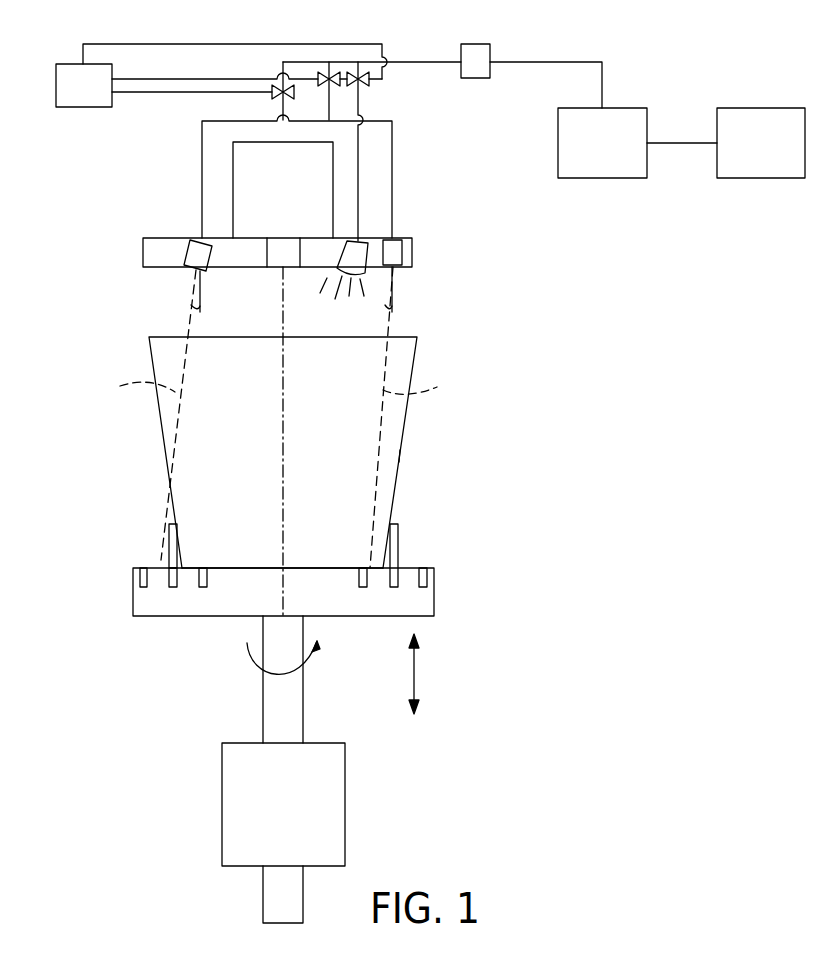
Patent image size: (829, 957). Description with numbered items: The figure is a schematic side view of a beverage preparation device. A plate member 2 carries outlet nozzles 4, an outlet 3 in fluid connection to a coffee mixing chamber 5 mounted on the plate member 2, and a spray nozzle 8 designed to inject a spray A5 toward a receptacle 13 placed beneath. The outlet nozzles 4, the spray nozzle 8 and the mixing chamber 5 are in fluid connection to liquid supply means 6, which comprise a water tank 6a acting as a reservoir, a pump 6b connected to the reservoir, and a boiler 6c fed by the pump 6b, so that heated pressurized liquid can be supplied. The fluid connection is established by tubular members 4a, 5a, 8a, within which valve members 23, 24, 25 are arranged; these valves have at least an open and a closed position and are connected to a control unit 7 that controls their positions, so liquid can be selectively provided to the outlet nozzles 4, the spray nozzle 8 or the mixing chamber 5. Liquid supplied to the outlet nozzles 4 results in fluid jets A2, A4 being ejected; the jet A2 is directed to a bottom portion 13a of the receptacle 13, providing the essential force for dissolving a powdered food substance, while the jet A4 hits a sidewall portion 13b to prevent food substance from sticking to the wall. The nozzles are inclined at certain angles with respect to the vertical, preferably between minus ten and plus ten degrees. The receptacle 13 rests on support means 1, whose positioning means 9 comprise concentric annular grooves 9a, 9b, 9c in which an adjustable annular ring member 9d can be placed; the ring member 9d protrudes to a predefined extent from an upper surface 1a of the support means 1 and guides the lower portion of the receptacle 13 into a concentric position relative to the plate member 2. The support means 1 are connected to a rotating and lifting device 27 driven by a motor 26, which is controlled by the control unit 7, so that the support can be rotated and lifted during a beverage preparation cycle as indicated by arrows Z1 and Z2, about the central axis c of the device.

The support means 1 is at (435, 596).
The upper surface of the support means 1a is at (408, 566).
The plate member 2 is at (413, 253).
The outlet 3 is at (275, 268).
The outlet nozzle 4 is at (188, 251).
The tubular member 4a is at (393, 177).
The coffee mixing chamber 5 is at (246, 185).
The tubular member 5a is at (283, 127).
The liquid supply means 6 is at (669, 54).
The water tank 6a is at (764, 108).
The pump 6b is at (630, 108).
The boiler 6c is at (475, 80).
The control unit 7 is at (56, 86).
The spray nozzle 8 is at (362, 246).
The tubular member 8a is at (360, 141).
The positioning means 9 is at (142, 568).
The annular groove 9a is at (143, 589).
The annular groove 9b is at (173, 589).
The annular groove 9c is at (203, 589).
The annular ring member 9d is at (168, 531).
The receptacle 13 is at (412, 350).
The bottom portion of the receptacle 13a is at (250, 567).
The sidewall portion of the receptacle 13b is at (400, 457).
The valve member 23 is at (367, 84).
The valve member 24 is at (274, 95).
The valve member 25 is at (322, 74).
The motor 26 is at (346, 797).
The rotating and lifting device 27 is at (305, 720).
The central axis c is at (284, 418).
The fluid jet A2 is at (415, 417).
The fluid jet A4 is at (148, 415).
The spray A5 is at (350, 290).
The arrow indicating rotation Z1 is at (291, 670).
The arrow indicating lifting Z2 is at (427, 674).